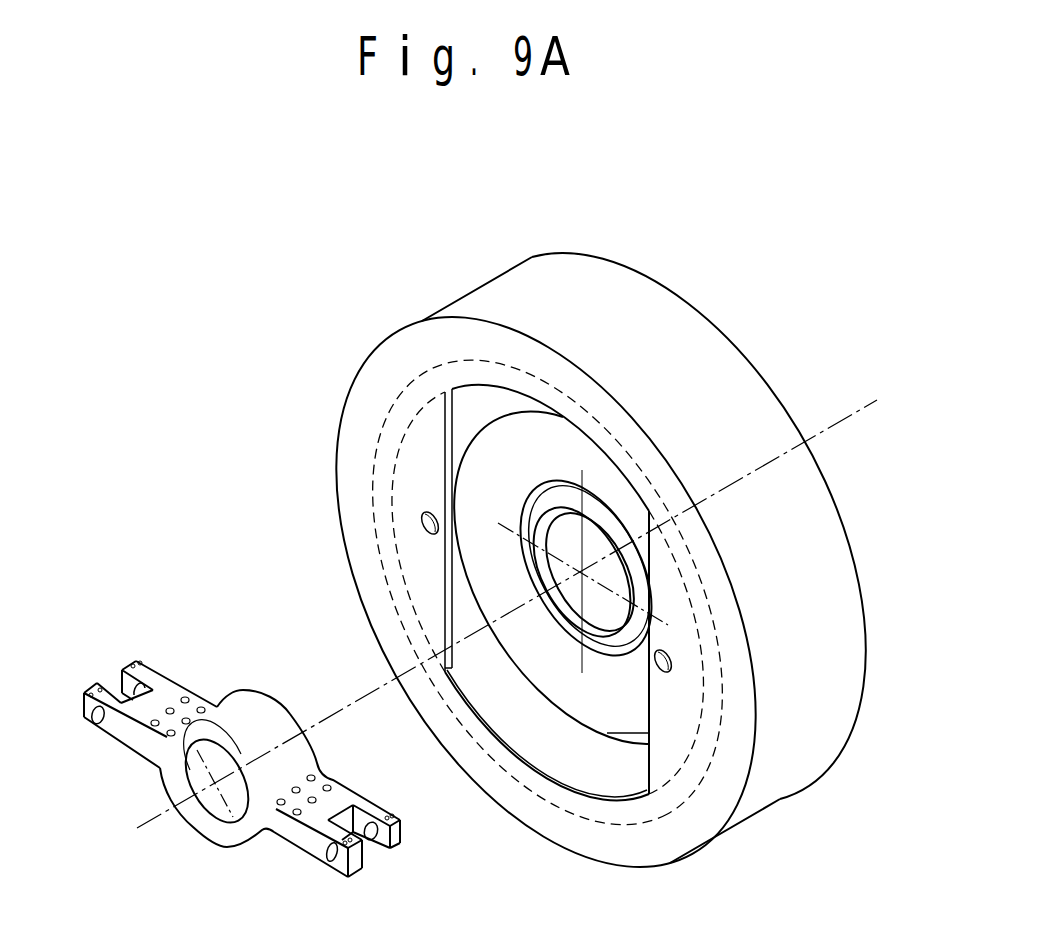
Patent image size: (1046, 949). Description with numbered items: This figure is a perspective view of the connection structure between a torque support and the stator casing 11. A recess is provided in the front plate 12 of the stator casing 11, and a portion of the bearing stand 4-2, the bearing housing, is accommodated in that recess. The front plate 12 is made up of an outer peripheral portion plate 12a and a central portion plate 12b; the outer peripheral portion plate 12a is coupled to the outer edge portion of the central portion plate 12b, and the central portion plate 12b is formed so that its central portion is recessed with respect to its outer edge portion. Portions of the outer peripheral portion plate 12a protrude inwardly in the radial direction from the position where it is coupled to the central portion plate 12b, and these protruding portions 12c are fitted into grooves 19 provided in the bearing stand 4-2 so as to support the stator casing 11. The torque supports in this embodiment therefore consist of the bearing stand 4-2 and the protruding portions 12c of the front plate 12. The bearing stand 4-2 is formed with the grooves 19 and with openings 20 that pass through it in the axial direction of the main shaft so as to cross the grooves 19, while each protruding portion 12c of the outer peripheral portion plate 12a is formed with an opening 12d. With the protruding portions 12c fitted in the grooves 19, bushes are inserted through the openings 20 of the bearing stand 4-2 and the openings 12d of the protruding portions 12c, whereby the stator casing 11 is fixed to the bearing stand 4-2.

The stator casing 11 is at (600, 268).
The front plate 12 is at (243, 476).
The outer peripheral portion plate 12a is at (353, 515).
The central portion plate 12b is at (467, 617).
The protruding portion 12c is at (679, 717).
The opening 12d is at (657, 663).
The bearing stand 4-2 is at (267, 703).
The groove 19 is at (108, 676).
The opening 20 is at (93, 716).